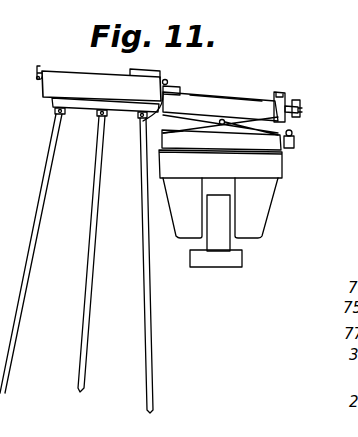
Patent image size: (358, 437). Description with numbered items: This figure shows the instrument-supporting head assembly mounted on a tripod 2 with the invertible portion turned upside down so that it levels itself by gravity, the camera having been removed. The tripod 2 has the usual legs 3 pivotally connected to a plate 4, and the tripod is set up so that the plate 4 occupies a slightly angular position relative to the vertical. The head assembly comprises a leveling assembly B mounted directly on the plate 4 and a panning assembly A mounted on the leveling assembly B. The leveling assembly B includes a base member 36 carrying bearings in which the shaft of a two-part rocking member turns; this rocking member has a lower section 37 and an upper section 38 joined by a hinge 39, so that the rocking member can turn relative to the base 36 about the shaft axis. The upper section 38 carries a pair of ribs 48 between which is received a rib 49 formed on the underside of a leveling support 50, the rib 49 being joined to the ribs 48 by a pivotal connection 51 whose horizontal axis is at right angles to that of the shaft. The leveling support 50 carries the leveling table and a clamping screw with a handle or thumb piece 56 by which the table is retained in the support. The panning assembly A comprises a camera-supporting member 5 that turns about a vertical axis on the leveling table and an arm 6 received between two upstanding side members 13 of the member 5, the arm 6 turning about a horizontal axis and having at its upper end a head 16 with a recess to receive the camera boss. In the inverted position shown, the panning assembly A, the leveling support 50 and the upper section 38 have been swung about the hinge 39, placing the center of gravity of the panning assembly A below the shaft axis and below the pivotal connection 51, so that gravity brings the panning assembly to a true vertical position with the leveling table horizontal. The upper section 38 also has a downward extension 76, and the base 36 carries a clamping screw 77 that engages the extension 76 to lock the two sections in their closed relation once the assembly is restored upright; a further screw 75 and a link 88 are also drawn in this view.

The tripod 2 is at (40, 149).
The legs 3 is at (82, 280).
The plate 4 is at (88, 100).
The camera-supporting member 5 is at (283, 170).
The arm 6 is at (218, 225).
The upstanding side members 13 is at (190, 203).
The head 16 is at (236, 257).
The base member 36 is at (70, 81).
The lower section 37 is at (224, 97).
The upper section 38 is at (213, 101).
The hinge 39 is at (171, 79).
The ribs 48 is at (233, 121).
The rib 49 is at (183, 132).
The leveling support 50 is at (296, 155).
The pivotal connection 51 is at (224, 119).
The handle or thumb piece 56 is at (295, 133).
The clamp screw 75 is at (302, 106).
The downward extension 76 is at (294, 101).
The clamping screw 77 is at (37, 71).
The link wire 88 is at (145, 129).
The panning assembly A is at (287, 158).
The leveling assembly B is at (210, 89).